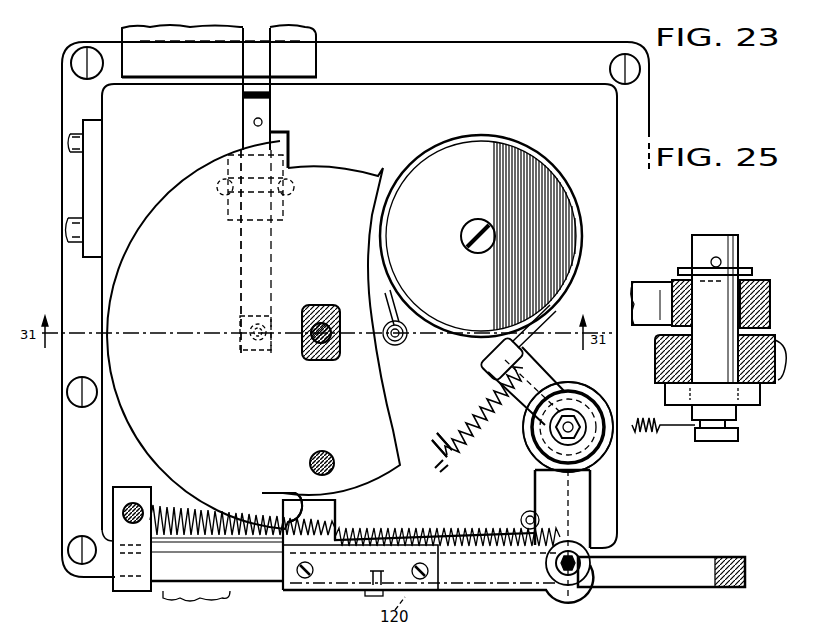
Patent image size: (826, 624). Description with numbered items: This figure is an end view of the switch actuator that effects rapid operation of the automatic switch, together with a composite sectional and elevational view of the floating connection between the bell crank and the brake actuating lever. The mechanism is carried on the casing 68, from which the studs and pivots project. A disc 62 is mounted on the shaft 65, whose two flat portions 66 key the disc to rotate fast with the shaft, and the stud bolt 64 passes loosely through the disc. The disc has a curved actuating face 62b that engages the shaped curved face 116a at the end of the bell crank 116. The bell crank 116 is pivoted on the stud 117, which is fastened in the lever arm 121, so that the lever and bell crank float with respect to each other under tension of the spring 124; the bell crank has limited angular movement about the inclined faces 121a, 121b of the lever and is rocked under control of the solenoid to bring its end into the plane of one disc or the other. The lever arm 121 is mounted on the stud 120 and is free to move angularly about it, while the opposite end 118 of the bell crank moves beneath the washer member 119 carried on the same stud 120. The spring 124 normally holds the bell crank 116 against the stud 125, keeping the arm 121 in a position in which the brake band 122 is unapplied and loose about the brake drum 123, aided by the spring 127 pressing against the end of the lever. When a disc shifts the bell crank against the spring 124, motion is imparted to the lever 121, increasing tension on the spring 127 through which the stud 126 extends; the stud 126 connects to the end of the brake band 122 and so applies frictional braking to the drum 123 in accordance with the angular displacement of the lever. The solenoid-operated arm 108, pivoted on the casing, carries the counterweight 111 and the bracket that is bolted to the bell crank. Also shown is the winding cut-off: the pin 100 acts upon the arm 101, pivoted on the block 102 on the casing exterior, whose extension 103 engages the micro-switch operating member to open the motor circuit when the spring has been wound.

In FIG. 23, the casing 68 is at (146, 180).
In FIG. 23, the extension 103 is at (248, 66).
In FIG. 23, the block 102 is at (226, 162).
In FIG. 23, the arm 101 is at (240, 275).
In FIG. 23, the pin 100 is at (245, 340).
In FIG. 23, the disc 62 is at (246, 427).
In FIG. 23, the actuating face 62b is at (284, 494).
In FIG. 23, the stud bolt 64 is at (330, 444).
In FIG. 23, the shaft 65 is at (313, 362).
In FIG. 23, the flat portions 66 is at (341, 331).
In FIG. 23, the arm 108 is at (680, 572).
In FIG. 23, the counterweight 111 is at (168, 592).
In FIG. 23, the bell crank 116 is at (473, 548).
In FIG. 25, the bell crank 116 is at (638, 331).
In FIG. 23, the curved face 116a is at (330, 497).
In FIG. 23, the stud 117 is at (595, 545).
In FIG. 25, the stud 117 is at (712, 245).
In FIG. 23, the end of bell crank 118 is at (580, 494).
In FIG. 23, the washer member 119 is at (600, 450).
In FIG. 23, the stud 120 is at (572, 422).
In FIG. 23, the lever arm 121 is at (513, 393).
In FIG. 25, the lever arm 121 is at (757, 278).
In FIG. 25, the inclined face 121a is at (762, 378).
In FIG. 25, the inclined face 121b is at (660, 370).
In FIG. 23, the brake band 122 is at (508, 320).
In FIG. 23, the brake drum 123 is at (535, 180).
In FIG. 23, the spring 124 is at (180, 497).
In FIG. 25, the spring 124 is at (655, 440).
In FIG. 23, the stud 125 is at (522, 512).
In FIG. 23, the stud 126 is at (450, 470).
In FIG. 23, the spring 127 is at (456, 408).